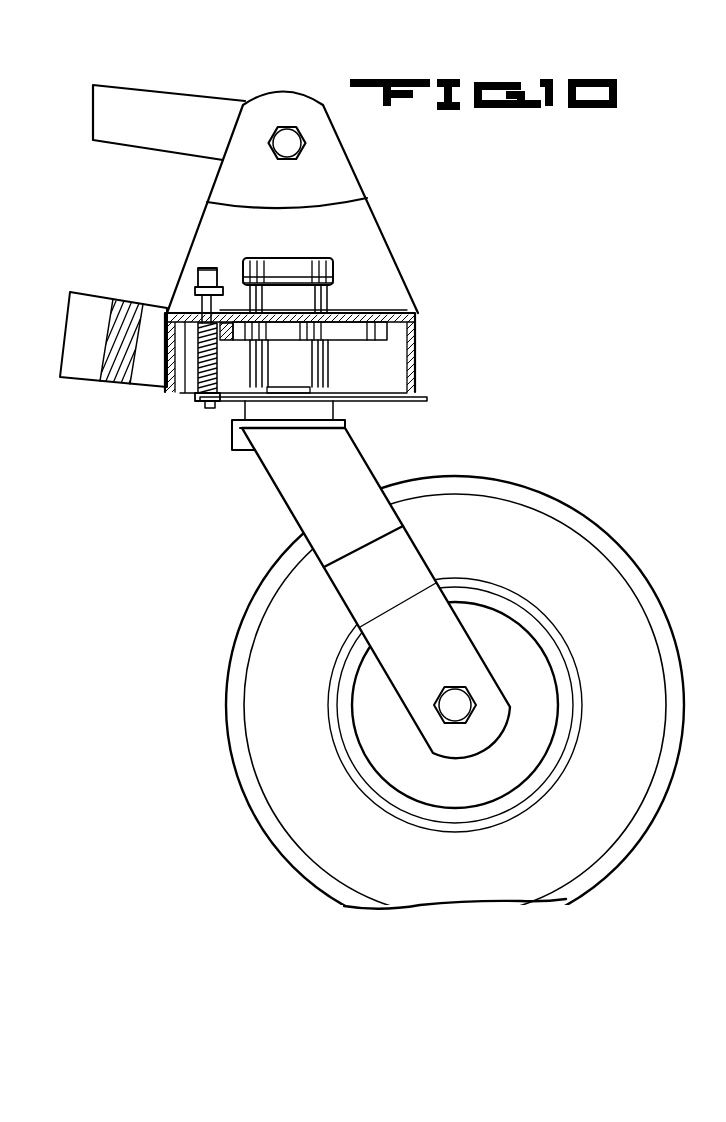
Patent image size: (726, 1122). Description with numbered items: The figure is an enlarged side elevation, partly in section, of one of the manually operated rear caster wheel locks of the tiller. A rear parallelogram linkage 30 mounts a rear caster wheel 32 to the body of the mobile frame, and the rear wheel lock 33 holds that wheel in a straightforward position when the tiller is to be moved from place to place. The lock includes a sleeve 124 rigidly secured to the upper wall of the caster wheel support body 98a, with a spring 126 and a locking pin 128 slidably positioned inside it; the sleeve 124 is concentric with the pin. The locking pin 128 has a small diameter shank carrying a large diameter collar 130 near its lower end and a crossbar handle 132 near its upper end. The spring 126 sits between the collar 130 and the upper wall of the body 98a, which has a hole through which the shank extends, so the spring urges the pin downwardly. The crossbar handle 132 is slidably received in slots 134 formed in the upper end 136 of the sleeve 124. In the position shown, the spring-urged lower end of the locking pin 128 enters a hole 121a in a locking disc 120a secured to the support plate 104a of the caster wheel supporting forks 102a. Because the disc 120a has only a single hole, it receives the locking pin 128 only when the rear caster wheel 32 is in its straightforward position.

The rear parallelogram linkage 30 is at (173, 82).
The rear caster wheel 32 is at (634, 656).
The rear wheel lock 33 is at (192, 258).
The caster wheel support body 98a is at (416, 357).
The caster wheel supporting fork 102a is at (410, 555).
The support plate 104a is at (345, 426).
The locking disc 120a is at (413, 398).
The hole 121a is at (213, 395).
The sleeve 124 is at (197, 270).
The spring 126 is at (197, 362).
The locking pin 128 is at (198, 307).
The collar 130 is at (197, 392).
The crossbar handle 132 is at (193, 283).
The slots 134 is at (227, 277).
The upper end of sleeve 136 is at (211, 267).